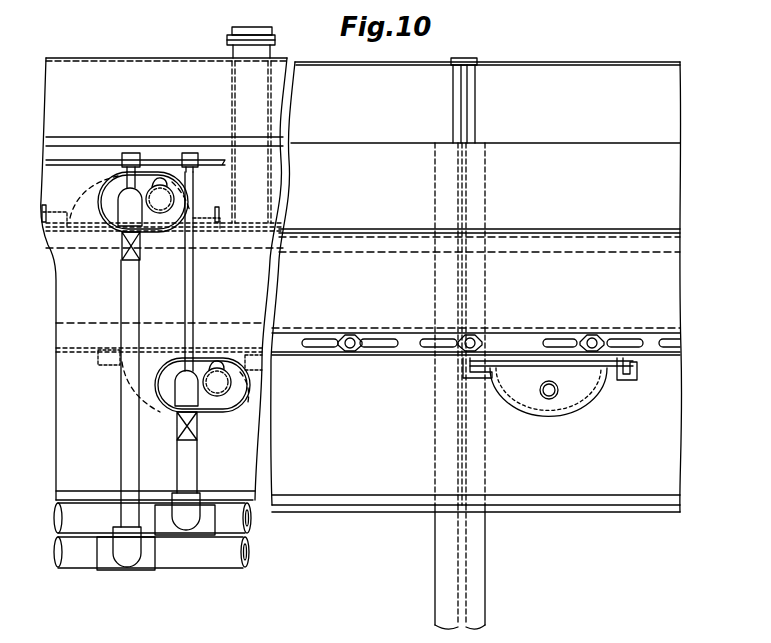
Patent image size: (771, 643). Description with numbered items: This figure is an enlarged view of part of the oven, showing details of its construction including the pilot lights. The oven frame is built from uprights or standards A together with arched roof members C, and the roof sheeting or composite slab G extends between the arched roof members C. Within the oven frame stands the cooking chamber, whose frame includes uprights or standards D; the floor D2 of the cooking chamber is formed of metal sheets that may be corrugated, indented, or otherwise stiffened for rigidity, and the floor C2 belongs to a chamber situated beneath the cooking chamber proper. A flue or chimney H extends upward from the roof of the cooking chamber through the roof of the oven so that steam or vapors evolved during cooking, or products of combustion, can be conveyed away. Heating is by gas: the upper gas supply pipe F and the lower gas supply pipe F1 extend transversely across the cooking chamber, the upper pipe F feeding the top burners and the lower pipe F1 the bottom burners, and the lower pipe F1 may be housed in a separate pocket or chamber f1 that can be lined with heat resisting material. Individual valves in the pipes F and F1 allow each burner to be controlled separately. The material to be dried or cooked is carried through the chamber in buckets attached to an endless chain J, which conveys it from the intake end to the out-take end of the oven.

The flue or chimney H is at (232, 33).
The roof sheeting or composite slab G is at (164, 279).
The upper gas supply pipe F is at (125, 203).
The lower gas supply pipe F1 is at (188, 380).
The arched roof member C is at (457, 112).
The upright or standard D is at (565, 232).
The endless chain J is at (500, 345).
The floor of the cooking chamber D2 is at (320, 357).
The pocket or chamber f1 is at (525, 384).
The floor of chamber beneath the cooking chamber C2 is at (510, 497).
The upright or standard A is at (440, 571).